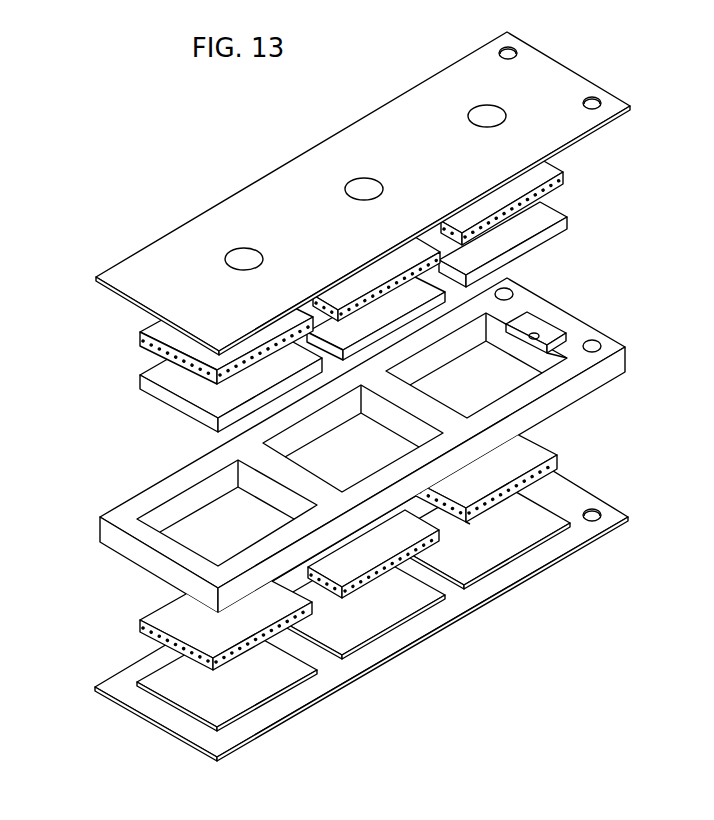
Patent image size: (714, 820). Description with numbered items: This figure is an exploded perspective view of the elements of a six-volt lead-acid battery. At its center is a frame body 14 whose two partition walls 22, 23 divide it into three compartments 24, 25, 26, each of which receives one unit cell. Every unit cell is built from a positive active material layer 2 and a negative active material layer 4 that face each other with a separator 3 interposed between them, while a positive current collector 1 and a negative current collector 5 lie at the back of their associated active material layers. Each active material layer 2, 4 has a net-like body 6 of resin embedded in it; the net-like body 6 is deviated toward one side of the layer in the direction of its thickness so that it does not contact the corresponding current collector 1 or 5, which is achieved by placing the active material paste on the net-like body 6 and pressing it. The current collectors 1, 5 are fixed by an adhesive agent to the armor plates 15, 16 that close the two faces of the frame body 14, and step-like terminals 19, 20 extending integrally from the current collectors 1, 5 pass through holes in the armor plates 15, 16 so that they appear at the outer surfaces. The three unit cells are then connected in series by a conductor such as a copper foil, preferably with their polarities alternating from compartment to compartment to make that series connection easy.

The positive current collector 1 is at (247, 713).
The positive active material layer 2 is at (438, 250).
The separator 3 is at (158, 395).
The negative active material layer 4 is at (527, 178).
The negative current collector 5 is at (407, 622).
The net-like body 6 is at (532, 201).
The frame body 14 is at (335, 445).
The armor plate 15 is at (467, 597).
The armor plate 16 is at (363, 193).
The step-like terminal 19 is at (362, 184).
The step-like terminal 20 is at (477, 117).
The partition wall 22 is at (285, 473).
The partition wall 23 is at (432, 407).
The compartment 24 is at (187, 530).
The compartment 25 is at (465, 527).
The compartment 26 is at (518, 379).